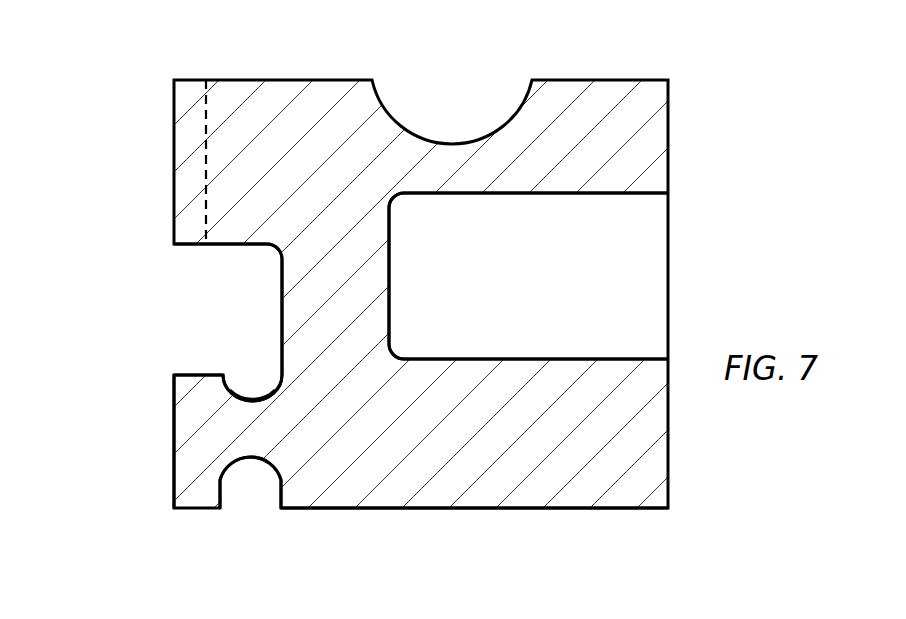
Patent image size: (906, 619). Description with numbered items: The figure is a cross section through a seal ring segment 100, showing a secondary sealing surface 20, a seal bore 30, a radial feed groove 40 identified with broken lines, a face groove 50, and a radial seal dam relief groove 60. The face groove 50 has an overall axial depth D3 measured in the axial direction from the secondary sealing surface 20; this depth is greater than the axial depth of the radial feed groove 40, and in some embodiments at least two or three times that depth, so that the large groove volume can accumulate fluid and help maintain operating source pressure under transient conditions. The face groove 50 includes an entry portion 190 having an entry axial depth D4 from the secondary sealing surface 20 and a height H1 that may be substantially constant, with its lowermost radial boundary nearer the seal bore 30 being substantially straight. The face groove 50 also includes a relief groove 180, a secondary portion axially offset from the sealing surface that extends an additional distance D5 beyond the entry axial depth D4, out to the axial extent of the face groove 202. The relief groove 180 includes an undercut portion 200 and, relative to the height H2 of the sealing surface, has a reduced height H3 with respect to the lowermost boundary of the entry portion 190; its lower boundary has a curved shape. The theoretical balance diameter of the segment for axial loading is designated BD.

The seal ring segment 100 is at (764, 62).
The radial feed groove 40 is at (190, 152).
The face groove 50 is at (168, 283).
The entry portion 190 is at (188, 375).
The undercut portion 200 is at (258, 384).
The relief groove 180 is at (268, 406).
The axial extent of the face groove 202 is at (283, 338).
The radial seal dam relief groove 60 is at (243, 481).
The secondary sealing surface 20 is at (173, 436).
The seal bore 30 is at (565, 510).
The theoretical balance diameter BD is at (228, 373).
The overall axial depth D3 is at (282, 250).
The entry axial depth D4 is at (223, 312).
The additional distance D5 is at (223, 358).
The height of the entry portion H1 is at (110, 375).
The height of the sealing surface H2 is at (174, 508).
The undercut or reduced height H3 is at (232, 400).